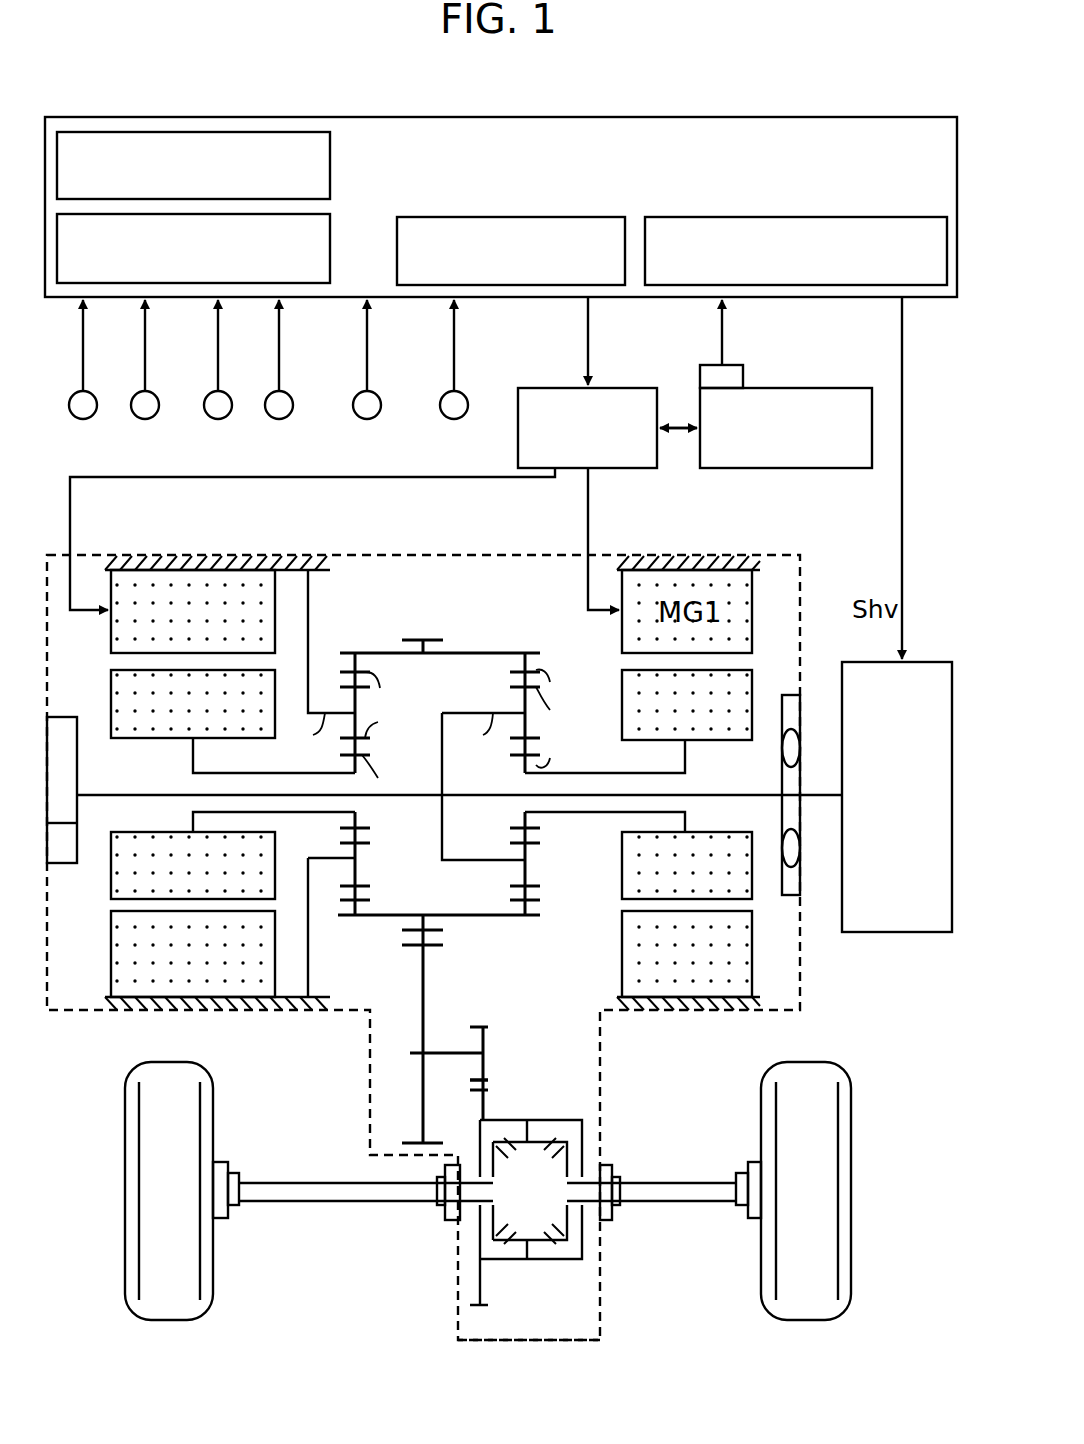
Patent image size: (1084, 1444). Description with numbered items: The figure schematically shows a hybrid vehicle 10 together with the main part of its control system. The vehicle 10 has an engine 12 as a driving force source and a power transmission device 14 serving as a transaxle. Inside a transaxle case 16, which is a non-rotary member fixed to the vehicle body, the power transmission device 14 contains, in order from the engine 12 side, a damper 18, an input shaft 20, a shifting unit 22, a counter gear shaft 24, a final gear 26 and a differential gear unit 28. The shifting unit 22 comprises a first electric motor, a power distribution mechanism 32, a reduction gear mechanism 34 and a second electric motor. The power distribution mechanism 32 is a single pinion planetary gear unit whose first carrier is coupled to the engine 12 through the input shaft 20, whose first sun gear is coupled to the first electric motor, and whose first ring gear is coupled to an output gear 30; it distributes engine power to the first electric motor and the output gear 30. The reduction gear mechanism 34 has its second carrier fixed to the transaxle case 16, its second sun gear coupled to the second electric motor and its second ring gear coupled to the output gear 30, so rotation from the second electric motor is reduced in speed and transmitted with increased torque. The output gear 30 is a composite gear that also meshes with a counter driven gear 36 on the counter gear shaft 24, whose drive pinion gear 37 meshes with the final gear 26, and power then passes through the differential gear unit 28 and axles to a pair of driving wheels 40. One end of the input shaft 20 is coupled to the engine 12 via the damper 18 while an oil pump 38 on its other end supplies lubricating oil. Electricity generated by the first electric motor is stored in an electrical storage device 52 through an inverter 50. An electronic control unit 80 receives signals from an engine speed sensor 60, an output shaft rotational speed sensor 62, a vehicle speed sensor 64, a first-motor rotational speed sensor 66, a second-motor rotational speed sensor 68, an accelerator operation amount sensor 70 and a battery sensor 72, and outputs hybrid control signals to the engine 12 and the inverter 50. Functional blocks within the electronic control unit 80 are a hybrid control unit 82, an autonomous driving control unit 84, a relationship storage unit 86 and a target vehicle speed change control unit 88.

The hybrid vehicle 10 is at (822, 103).
The engine 12 is at (888, 932).
The power transmission device 14 is at (438, 1298).
The transaxle case 16 is at (515, 553).
The damper 18 is at (791, 897).
The input shaft 20 is at (707, 797).
The shifting unit 22 is at (378, 546).
The counter gear shaft 24 is at (418, 1052).
The final gear 26 is at (487, 1100).
The differential gear unit 28 is at (533, 1268).
The output gear 30 is at (430, 638).
The power distribution mechanism 32 is at (524, 640).
The reduction gear mechanism 34 is at (355, 640).
The counter driven gear 36 is at (430, 947).
The drive pinion gear 37 is at (487, 1043).
The oil pump 38 is at (63, 724).
The driving wheels 40 is at (170, 1312).
The inverter 50 is at (604, 470).
The electrical storage device 52 is at (735, 470).
The engine speed sensor 60 is at (85, 419).
The output shaft rotational speed sensor 62 is at (147, 419).
The vehicle speed sensor 64 is at (220, 419).
The MG1 rotational speed sensor 66 is at (281, 419).
The MG2 rotational speed sensor 68 is at (369, 419).
The accelerator operation amount sensor 70 is at (456, 419).
The battery sensor 72 is at (710, 367).
The electronic control unit 80 is at (892, 128).
The hybrid control unit 82 is at (326, 139).
The autonomous driving control unit 84 is at (326, 221).
The relationship storage unit 86 is at (603, 220).
The target vehicle speed change control unit 88 is at (892, 220).